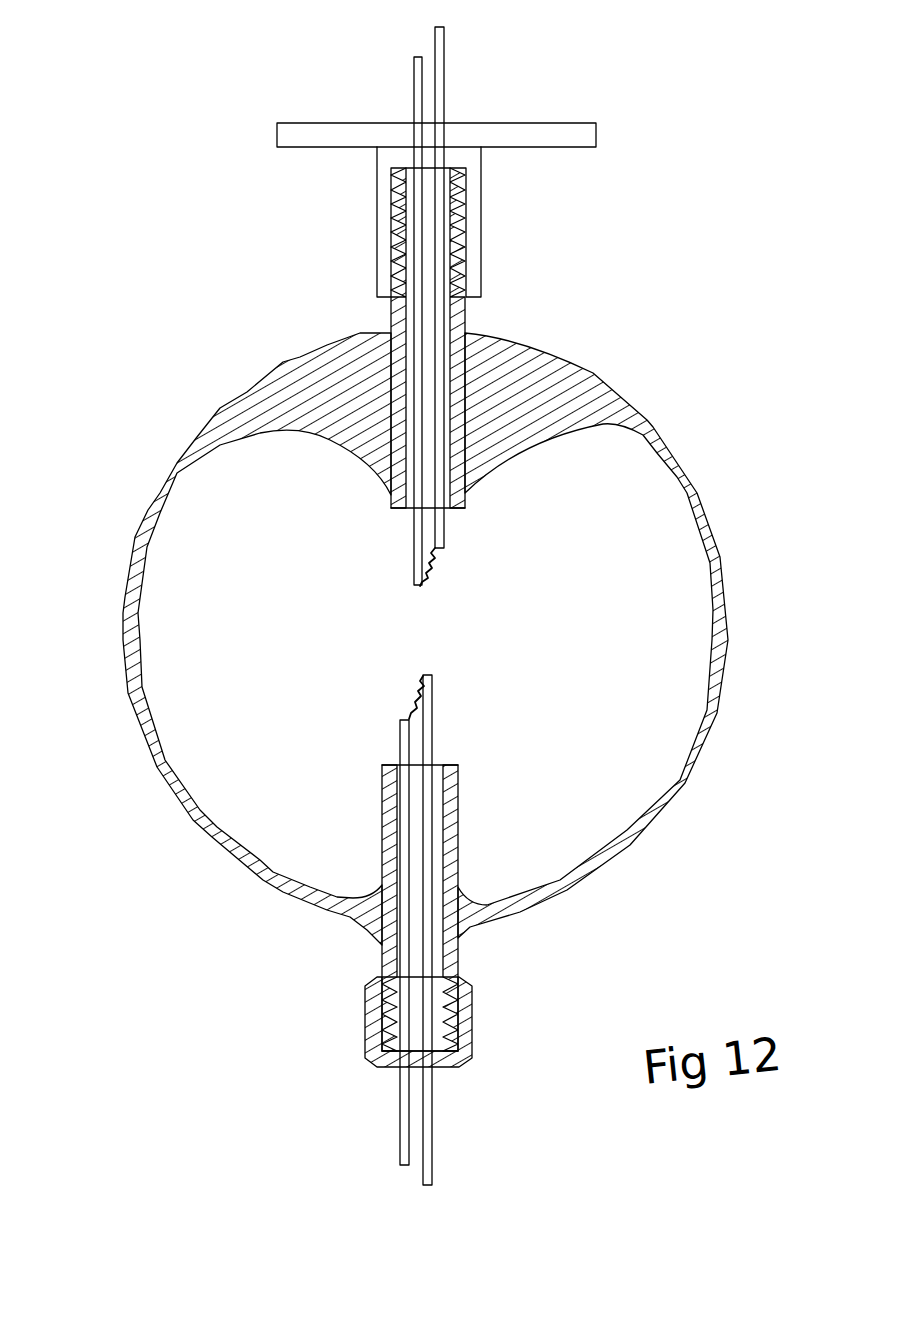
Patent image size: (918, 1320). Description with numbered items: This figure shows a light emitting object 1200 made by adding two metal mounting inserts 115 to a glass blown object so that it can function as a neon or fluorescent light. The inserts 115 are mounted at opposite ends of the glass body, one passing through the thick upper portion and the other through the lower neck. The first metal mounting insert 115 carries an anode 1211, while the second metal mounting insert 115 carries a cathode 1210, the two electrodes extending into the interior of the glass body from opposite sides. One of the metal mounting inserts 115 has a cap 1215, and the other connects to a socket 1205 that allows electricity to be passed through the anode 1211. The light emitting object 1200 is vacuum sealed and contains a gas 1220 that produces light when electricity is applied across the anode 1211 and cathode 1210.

The light emitting object 1200 is at (448, 606).
The socket 1205 is at (481, 242).
The metal mounting insert 115 is at (463, 333).
The cathode 1210 is at (432, 532).
The anode 1211 is at (422, 737).
The cap 1215 is at (463, 1023).
The gas 1220 is at (235, 743).